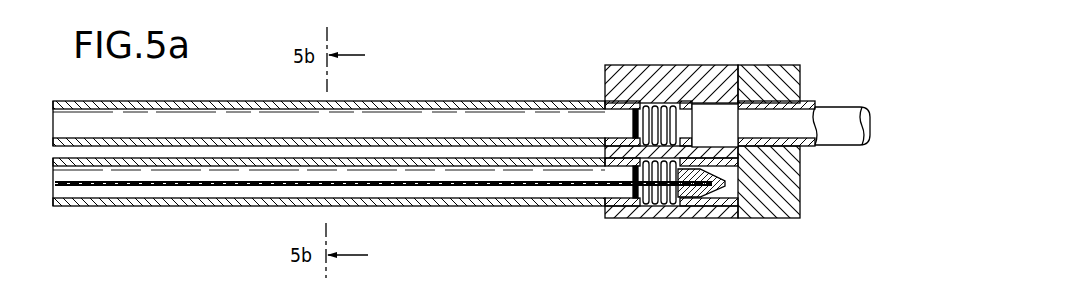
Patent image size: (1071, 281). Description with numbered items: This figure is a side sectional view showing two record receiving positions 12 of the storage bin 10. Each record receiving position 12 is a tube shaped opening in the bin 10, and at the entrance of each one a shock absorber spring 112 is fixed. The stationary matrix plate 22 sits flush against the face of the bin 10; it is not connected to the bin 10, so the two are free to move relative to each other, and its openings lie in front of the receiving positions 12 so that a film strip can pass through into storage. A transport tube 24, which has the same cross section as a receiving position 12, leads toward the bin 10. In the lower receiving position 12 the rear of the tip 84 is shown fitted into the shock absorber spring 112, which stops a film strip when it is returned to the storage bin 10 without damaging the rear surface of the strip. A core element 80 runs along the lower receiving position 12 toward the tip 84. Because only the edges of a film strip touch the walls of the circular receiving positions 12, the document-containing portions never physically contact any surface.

The bin 10 is at (665, 66).
The record receiving position 12 is at (412, 102).
The stationary matrix plate 22 is at (772, 66).
The transport tube 24 is at (843, 106).
The core cable 80 is at (167, 186).
The tip 84 is at (703, 207).
The shock absorber spring 112 is at (638, 118).